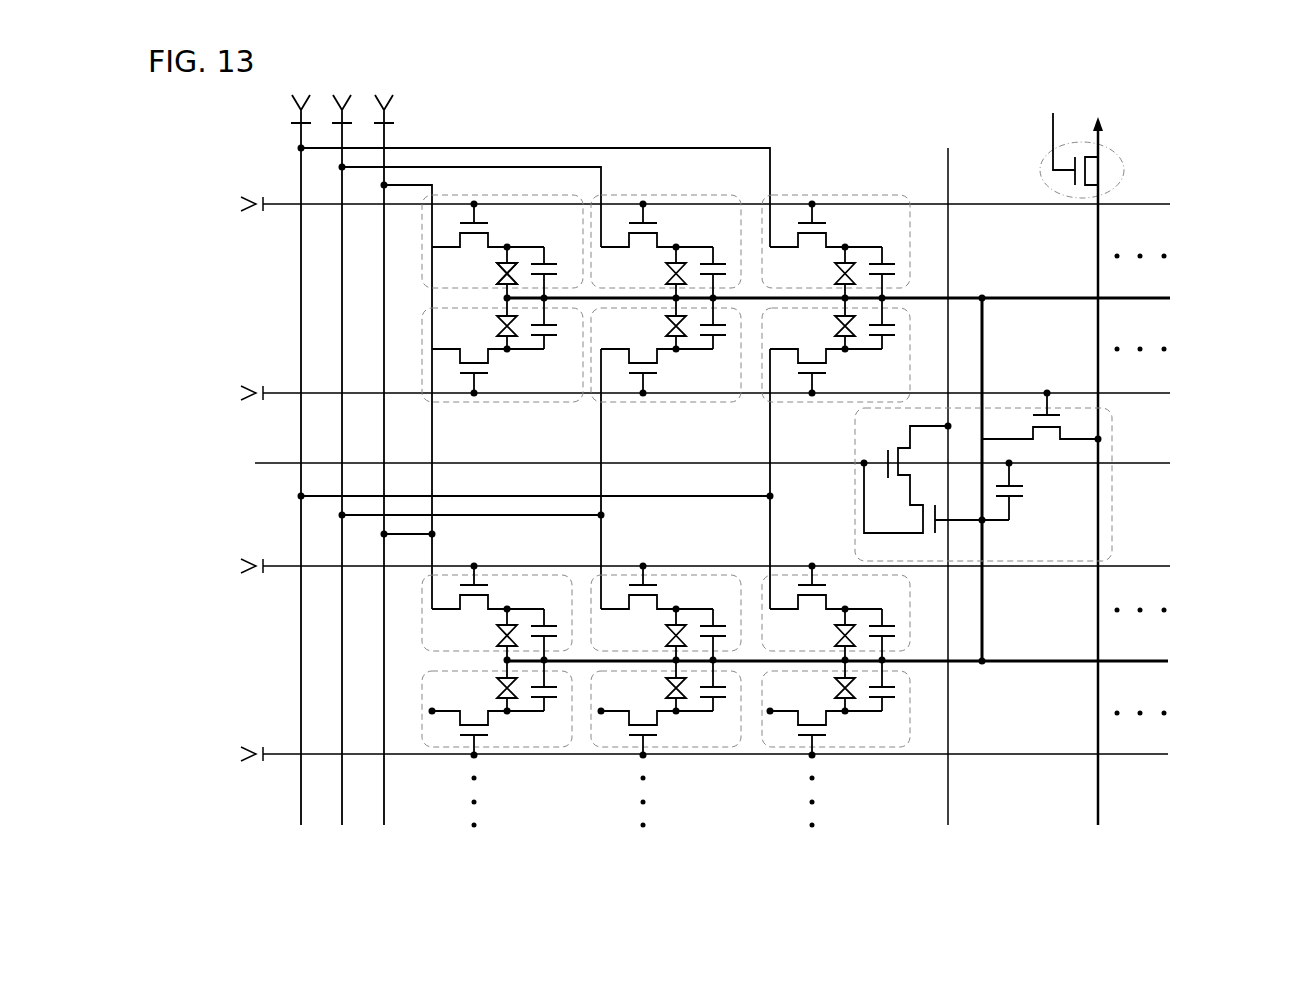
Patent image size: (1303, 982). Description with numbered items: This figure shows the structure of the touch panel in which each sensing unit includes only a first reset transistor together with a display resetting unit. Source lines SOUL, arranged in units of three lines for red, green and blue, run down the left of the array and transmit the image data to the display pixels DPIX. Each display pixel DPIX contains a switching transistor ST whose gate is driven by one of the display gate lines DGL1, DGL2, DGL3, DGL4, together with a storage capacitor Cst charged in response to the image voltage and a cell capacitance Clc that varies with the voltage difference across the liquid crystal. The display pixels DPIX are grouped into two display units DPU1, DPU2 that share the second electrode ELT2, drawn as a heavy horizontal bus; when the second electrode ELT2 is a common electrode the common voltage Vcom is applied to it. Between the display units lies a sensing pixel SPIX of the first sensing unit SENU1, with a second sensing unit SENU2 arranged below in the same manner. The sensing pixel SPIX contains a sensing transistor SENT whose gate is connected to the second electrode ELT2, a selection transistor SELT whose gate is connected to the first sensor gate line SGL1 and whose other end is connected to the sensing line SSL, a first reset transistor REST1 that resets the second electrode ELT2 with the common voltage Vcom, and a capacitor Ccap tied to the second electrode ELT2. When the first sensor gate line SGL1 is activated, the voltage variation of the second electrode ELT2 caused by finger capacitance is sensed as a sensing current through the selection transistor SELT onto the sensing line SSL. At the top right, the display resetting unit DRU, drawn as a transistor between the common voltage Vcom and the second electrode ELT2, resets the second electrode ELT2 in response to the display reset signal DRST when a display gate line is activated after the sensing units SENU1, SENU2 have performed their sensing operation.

The source line SOUL is at (287, 87).
The display pixel DPIX is at (666, 467).
The sensing signal line SSL is at (947, 473).
The display reset signal DRST is at (1047, 137).
The common voltage Vcom is at (1137, 139).
The display resetting unit DRU is at (1093, 457).
The display gate line DGL1 is at (676, 204).
The display gate line DGL2 is at (676, 393).
The display gate line DGL3 is at (676, 566).
The display gate line DGL4 is at (675, 754).
The first sensor gate line SGL1 is at (684, 463).
The switching transistor ST is at (494, 251).
The storage capacitor Cst is at (493, 277).
The cell capacitance Clc is at (550, 259).
The display unit DPU1 is at (1180, 254).
The display unit DPU2 is at (1180, 350).
The second electrode ELT2 is at (865, 476).
The sensing pixel SPIX is at (1019, 476).
The selection transistor SELT is at (905, 478).
The sensing transistor SENT is at (952, 531).
The first reset transistor REST1 is at (1042, 427).
The sensing capacitor Ccap is at (1029, 490).
The first sensing unit SENU1 is at (1177, 511).
The second sensing unit SENU2 is at (1177, 796).